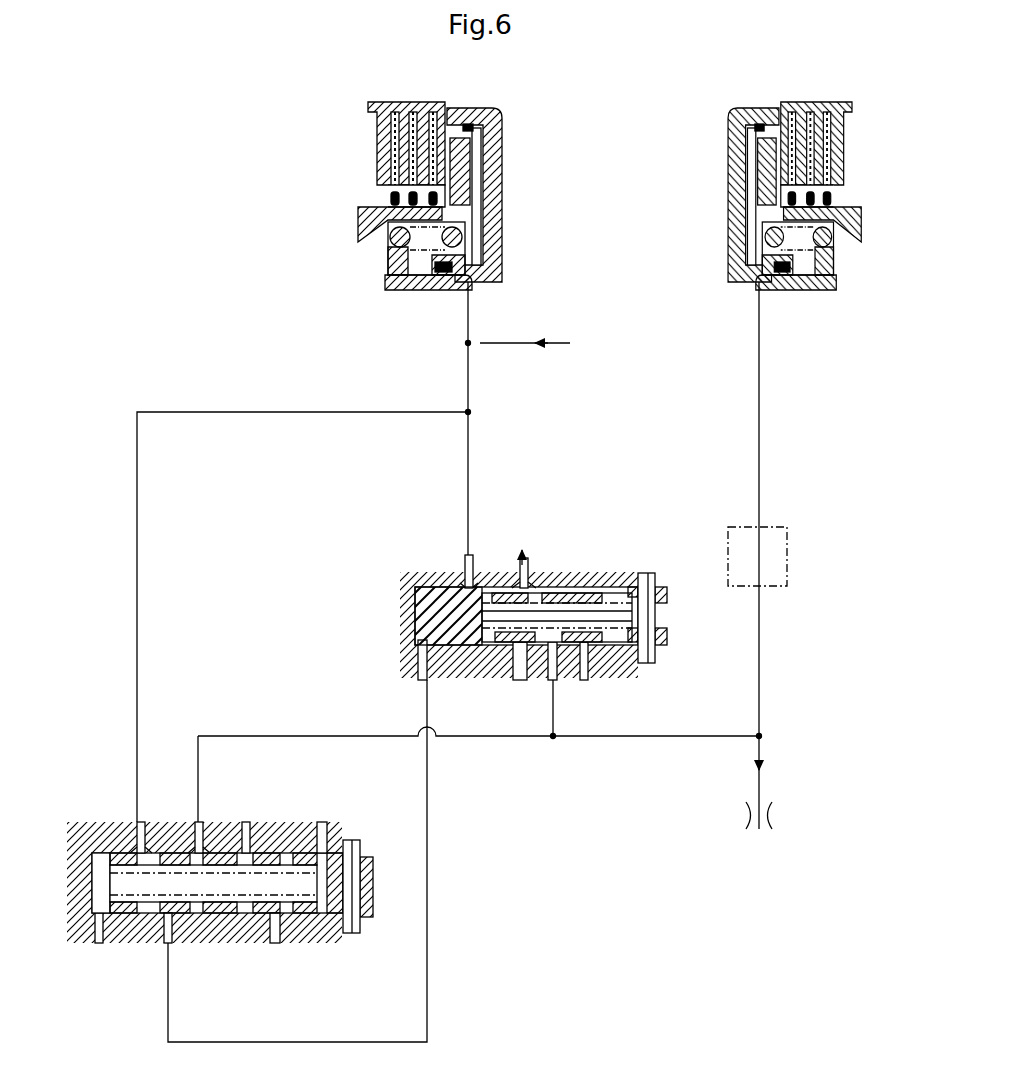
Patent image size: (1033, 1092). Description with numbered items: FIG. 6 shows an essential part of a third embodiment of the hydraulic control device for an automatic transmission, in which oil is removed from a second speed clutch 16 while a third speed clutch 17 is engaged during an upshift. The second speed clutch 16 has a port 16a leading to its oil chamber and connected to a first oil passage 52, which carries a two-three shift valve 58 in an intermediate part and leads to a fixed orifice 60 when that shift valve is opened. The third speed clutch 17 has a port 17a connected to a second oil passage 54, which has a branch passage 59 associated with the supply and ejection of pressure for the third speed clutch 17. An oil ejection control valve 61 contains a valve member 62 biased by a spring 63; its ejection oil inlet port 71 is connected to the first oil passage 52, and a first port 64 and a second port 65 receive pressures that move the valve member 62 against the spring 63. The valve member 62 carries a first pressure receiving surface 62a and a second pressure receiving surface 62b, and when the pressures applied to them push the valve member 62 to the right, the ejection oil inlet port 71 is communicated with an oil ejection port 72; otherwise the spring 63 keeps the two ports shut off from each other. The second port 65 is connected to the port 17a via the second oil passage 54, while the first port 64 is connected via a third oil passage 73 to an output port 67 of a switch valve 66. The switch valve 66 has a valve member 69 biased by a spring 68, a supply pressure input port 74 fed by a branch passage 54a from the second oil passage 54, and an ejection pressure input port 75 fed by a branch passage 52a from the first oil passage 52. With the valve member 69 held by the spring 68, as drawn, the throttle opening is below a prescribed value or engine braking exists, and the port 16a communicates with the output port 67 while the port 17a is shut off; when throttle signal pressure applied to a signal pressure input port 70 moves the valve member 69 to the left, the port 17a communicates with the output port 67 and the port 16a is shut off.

The second speed clutch 16 is at (718, 106).
The port 16a is at (757, 284).
The third speed clutch 17 is at (495, 106).
The port 17a is at (468, 283).
The first oil passage 52 is at (760, 470).
The branch passage 52a is at (478, 774).
The second oil passage 54 is at (470, 381).
The branch passage 54a is at (303, 412).
The 2-3 shift valve 58 is at (787, 545).
The branch passage 59 is at (553, 342).
The fixed orifice 60 is at (793, 838).
The oil ejection control valve 61 is at (533, 611).
The valve member 62 is at (475, 624).
The first pressure receiving surface 62a is at (415, 612).
The second pressure receiving surface 62b is at (463, 600).
The spring 63 is at (622, 600).
The first port 64 is at (413, 690).
The second port 65 is at (480, 552).
The switch valve 66 is at (243, 868).
The output port 67 is at (176, 950).
The spring 68 is at (93, 853).
The valve member 69 is at (273, 860).
The signal pressure input port 70 is at (324, 815).
The ejection oil inlet port 71 is at (558, 688).
The oil ejection port 72 is at (533, 562).
The third oil passage 73 is at (427, 941).
The supply pressure input port 74 is at (150, 812).
The ejection pressure input port 75 is at (206, 812).